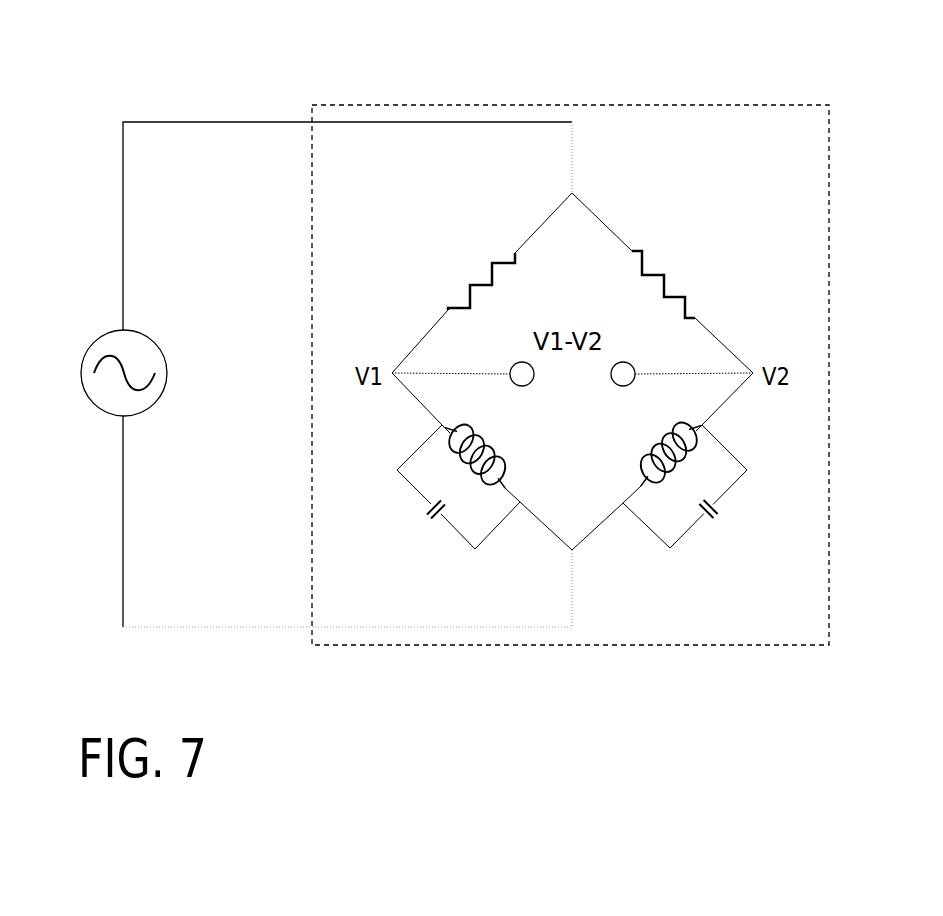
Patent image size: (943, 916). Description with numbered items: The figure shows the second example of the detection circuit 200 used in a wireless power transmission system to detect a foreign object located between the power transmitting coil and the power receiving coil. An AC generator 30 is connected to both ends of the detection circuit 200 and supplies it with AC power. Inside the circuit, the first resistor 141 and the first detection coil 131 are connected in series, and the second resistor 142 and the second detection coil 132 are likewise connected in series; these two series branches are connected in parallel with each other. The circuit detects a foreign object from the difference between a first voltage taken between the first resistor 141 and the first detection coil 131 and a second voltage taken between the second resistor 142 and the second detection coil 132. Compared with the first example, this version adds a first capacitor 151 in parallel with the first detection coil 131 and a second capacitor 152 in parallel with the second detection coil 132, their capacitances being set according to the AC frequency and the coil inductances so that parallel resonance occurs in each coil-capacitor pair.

The AC generator 30 is at (96, 327).
The detection circuit 200 is at (628, 104).
The first detection coil 131 is at (499, 446).
The second detection coil 132 is at (648, 446).
The first resistor 141 is at (465, 263).
The second resistor 142 is at (684, 268).
The first capacitor 151 is at (420, 522).
The second capacitor 152 is at (726, 523).